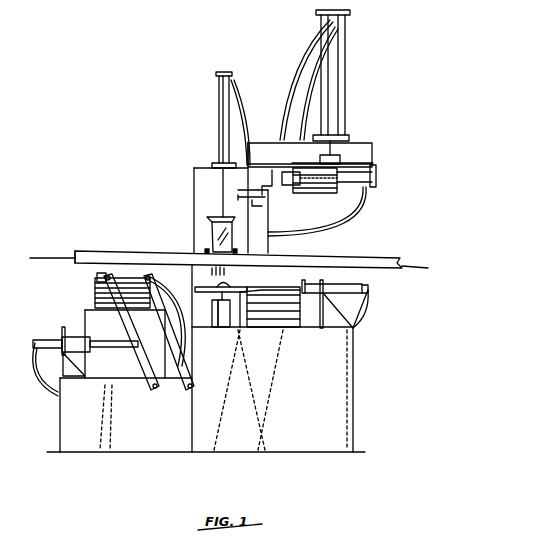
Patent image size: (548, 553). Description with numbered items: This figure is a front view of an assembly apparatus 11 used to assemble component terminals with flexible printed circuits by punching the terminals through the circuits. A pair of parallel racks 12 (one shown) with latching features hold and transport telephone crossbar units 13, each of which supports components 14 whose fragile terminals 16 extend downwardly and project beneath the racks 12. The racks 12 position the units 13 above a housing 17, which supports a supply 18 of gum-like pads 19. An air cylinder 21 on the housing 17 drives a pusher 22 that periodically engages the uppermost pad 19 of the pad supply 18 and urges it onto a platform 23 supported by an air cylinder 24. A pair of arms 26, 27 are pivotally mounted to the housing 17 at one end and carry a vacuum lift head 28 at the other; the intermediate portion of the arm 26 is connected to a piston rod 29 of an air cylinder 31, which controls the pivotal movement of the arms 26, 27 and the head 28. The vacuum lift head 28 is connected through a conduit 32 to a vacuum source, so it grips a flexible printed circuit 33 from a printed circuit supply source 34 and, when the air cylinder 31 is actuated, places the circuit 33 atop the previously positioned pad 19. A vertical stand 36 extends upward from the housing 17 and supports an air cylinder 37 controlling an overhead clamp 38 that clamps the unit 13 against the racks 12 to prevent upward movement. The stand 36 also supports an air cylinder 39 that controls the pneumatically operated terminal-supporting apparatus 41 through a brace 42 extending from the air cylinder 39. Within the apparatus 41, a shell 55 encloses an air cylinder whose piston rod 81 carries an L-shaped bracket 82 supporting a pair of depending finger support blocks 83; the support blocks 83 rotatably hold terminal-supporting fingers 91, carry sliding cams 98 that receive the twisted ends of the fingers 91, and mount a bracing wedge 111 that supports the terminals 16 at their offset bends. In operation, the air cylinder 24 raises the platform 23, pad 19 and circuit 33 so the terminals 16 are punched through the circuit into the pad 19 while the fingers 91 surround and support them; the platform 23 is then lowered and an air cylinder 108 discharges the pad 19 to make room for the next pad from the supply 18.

The assembly apparatus 11 is at (124, 160).
The racks 12 is at (106, 252).
The telephone crossbar unit 13 is at (204, 232).
The component 14 is at (207, 243).
The terminal 16 is at (221, 279).
The housing 17 is at (349, 437).
The pad supply 18 is at (273, 331).
The pad 19 is at (296, 288).
The air cylinder 21 is at (358, 284).
The pusher 22 is at (306, 281).
The platform 23 is at (213, 299).
The air cylinder 24 is at (222, 328).
The arm 26 is at (148, 386).
The arm 27 is at (190, 388).
The vacuum lift head 28 is at (96, 277).
The piston rod 29 is at (120, 350).
The air cylinder 31 is at (62, 335).
The conduit 32 is at (160, 280).
The flexible printed circuit 33 is at (243, 290).
The printed circuit supply source 34 is at (95, 296).
The vertical stand 36 is at (193, 172).
The air cylinder 37 is at (218, 76).
The overhead clamp 38 is at (218, 216).
The air cylinder 39 is at (345, 40).
The terminal-supporting apparatus 41 is at (395, 177).
The brace 42 is at (360, 166).
The shell 55 is at (372, 186).
The piston rod 81 is at (296, 171).
The L-shaped bracket 82 is at (272, 171).
The finger support block 83 is at (262, 200).
The terminal-supporting finger 91 is at (246, 207).
The sliding cam 98 is at (286, 197).
The air cylinder 108 is at (229, 283).
The bracing wedge 111 is at (252, 190).